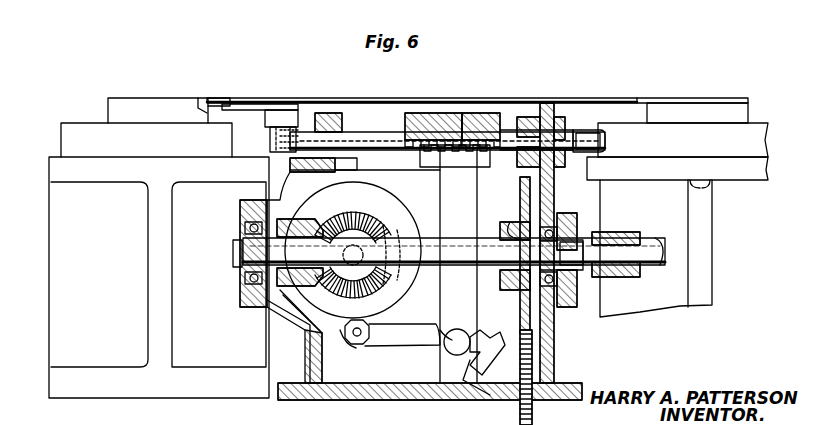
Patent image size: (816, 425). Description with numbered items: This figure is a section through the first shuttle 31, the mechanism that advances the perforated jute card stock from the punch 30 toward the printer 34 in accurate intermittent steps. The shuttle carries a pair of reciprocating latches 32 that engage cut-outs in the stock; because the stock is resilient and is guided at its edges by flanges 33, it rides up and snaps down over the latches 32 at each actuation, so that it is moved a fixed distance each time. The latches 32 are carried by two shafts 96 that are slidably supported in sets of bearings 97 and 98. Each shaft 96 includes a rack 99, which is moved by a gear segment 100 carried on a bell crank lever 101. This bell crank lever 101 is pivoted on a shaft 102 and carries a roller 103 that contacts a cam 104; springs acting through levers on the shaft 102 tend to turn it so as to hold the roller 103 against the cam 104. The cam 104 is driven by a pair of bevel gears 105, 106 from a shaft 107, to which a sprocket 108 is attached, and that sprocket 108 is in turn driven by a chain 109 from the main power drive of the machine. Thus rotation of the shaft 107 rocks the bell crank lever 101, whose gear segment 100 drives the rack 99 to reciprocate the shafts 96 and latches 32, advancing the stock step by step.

The punch 30 is at (105, 98).
The first shuttle 31 is at (392, 98).
The reciprocating latches 32 is at (262, 104).
The flanges 33 is at (220, 104).
The printer 34 is at (716, 108).
The shafts 96 is at (414, 130).
The bearings 97 is at (345, 140).
The bearings 98 is at (566, 140).
The rack 99 is at (470, 118).
The gear segment 100 is at (438, 178).
The bell crank lever 101 is at (448, 300).
The shaft 102 is at (452, 350).
The roller 103 is at (356, 350).
The cam 104 is at (375, 218).
The bevel gear 105 is at (380, 236).
The bevel gear 106 is at (318, 228).
The shaft 107 is at (490, 238).
The sprocket 108 is at (522, 306).
The chain 109 is at (518, 414).